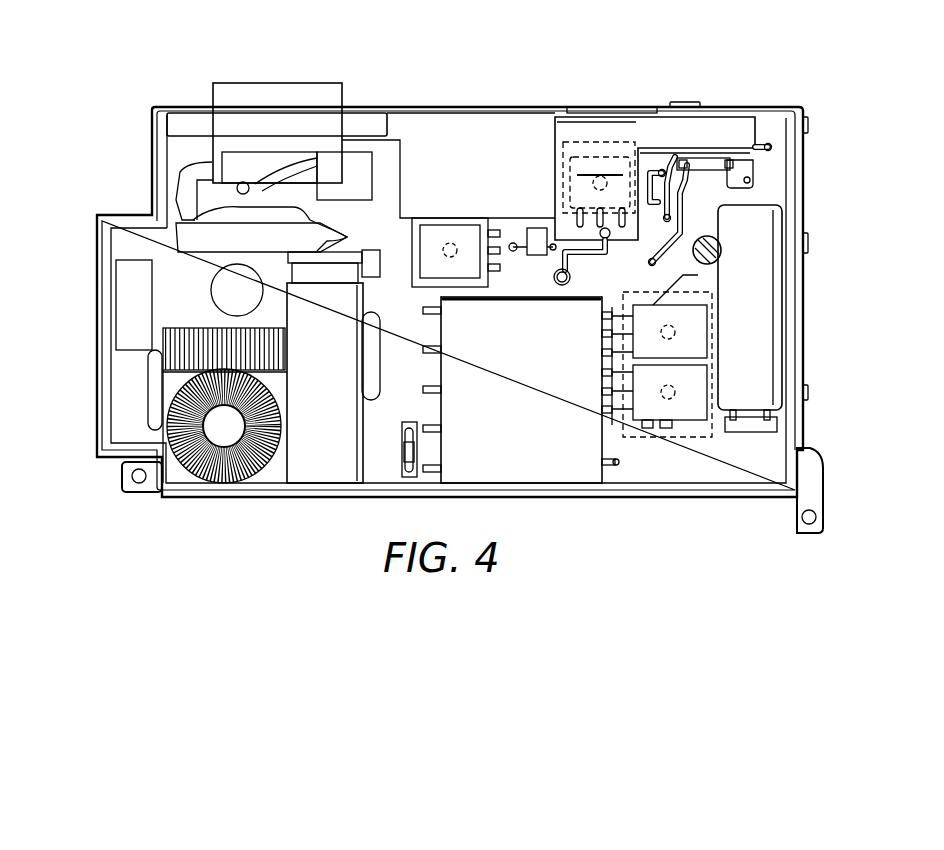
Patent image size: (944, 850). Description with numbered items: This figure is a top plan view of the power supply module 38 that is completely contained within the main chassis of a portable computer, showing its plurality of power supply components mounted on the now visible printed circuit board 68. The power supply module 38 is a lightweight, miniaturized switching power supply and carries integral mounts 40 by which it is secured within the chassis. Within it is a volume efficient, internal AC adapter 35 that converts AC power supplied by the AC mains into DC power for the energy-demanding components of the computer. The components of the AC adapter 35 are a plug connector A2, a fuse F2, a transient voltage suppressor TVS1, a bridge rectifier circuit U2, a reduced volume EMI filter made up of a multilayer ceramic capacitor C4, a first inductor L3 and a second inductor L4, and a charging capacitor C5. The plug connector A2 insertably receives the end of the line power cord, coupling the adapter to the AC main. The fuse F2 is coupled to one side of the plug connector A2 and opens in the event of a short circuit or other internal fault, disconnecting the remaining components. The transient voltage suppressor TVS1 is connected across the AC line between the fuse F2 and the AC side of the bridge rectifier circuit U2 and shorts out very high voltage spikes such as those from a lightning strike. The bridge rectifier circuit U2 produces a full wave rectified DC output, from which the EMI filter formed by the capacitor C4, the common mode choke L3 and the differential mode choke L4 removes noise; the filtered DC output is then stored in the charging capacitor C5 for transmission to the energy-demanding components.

The internal AC adapter 35 is at (158, 56).
The power supply module 38 is at (727, 56).
The mounts 40 is at (139, 493).
The printed circuit board 68 is at (713, 476).
The plug connector A2 is at (277, 82).
The fuse F2 is at (192, 197).
The transient voltage suppressor TVS1 is at (125, 310).
The bridge rectifier circuit U2 is at (237, 290).
The first inductor L3 is at (200, 327).
The second inductor L4 is at (223, 481).
The multilayer ceramic capacitor C4 is at (155, 392).
The charging capacitor C5 is at (325, 367).